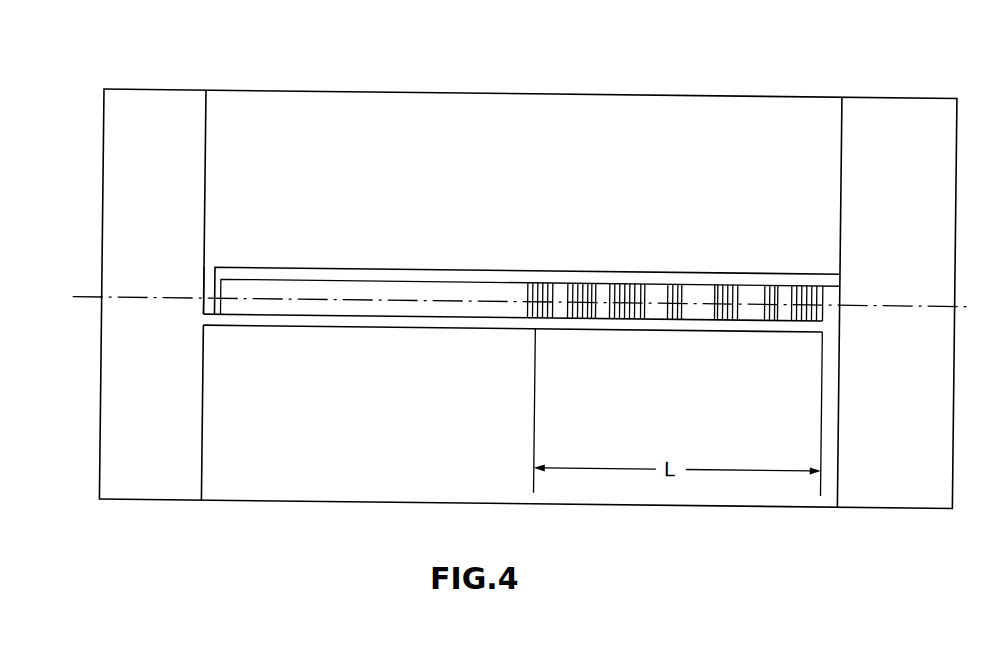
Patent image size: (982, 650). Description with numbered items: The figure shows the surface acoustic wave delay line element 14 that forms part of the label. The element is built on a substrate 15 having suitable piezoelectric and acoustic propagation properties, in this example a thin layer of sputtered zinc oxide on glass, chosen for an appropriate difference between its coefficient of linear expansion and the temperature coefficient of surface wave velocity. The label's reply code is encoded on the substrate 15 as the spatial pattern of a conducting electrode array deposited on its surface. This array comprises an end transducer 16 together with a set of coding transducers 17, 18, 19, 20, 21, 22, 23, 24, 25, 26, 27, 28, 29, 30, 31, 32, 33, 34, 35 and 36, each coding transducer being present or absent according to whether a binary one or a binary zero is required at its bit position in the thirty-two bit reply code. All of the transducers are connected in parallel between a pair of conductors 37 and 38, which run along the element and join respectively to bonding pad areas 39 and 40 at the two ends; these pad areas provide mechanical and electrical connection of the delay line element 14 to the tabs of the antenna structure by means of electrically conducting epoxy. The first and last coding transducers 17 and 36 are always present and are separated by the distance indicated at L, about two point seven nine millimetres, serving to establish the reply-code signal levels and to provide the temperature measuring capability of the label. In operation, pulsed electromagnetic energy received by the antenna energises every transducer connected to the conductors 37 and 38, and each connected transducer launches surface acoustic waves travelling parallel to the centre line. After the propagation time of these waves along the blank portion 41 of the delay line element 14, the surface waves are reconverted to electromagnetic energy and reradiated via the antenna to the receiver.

The surface acoustic wave delay line element 14 is at (508, 88).
The substrate 15 is at (398, 105).
The end transducer 16 is at (207, 281).
The coding transducer 17 is at (509, 266).
The coding transducer 18 is at (550, 278).
The coding transducer 19 is at (558, 278).
The coding transducer 20 is at (585, 278).
The coding transducer 21 is at (614, 278).
The coding transducer 22 is at (638, 278).
The coding transducer 23 is at (603, 313).
The coding transducer 24 is at (630, 313).
The coding transducer 25 is at (642, 278).
The coding transducer 26 is at (662, 313).
The coding transducer 27 is at (685, 313).
The coding transducer 28 is at (699, 278).
The coding transducer 29 is at (722, 278).
The coding transducer 30 is at (744, 278).
The coding transducer 31 is at (755, 313).
The coding transducer 32 is at (773, 313).
The coding transducer 33 is at (799, 278).
The coding transducer 34 is at (802, 278).
The coding transducer 35 is at (814, 266).
The coding transducer 36 is at (828, 289).
The conductor 37 is at (433, 268).
The conductor 38 is at (431, 325).
The bonding pad area 39 is at (918, 89).
The bonding pad area 40 is at (118, 413).
The blank portion 41 is at (302, 283).